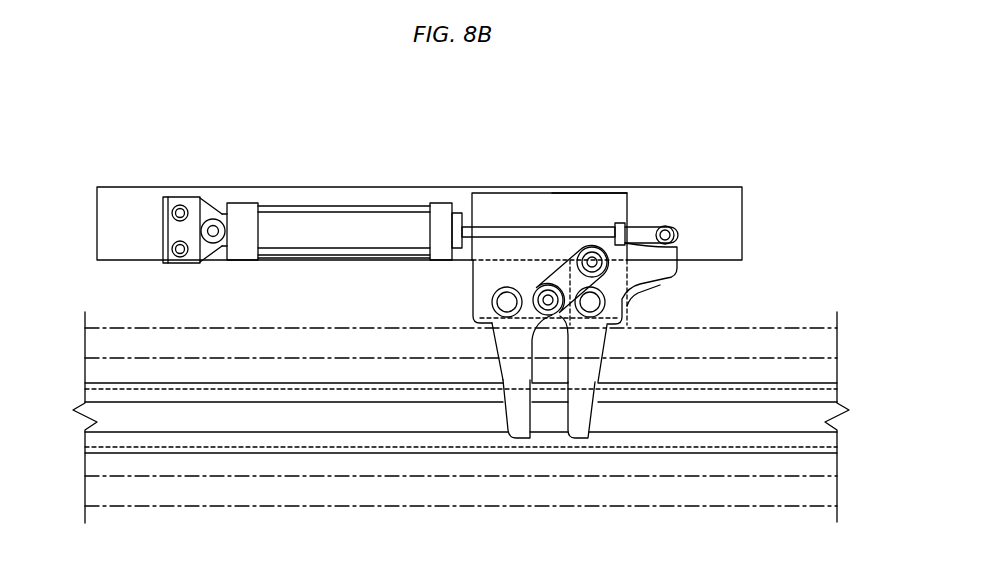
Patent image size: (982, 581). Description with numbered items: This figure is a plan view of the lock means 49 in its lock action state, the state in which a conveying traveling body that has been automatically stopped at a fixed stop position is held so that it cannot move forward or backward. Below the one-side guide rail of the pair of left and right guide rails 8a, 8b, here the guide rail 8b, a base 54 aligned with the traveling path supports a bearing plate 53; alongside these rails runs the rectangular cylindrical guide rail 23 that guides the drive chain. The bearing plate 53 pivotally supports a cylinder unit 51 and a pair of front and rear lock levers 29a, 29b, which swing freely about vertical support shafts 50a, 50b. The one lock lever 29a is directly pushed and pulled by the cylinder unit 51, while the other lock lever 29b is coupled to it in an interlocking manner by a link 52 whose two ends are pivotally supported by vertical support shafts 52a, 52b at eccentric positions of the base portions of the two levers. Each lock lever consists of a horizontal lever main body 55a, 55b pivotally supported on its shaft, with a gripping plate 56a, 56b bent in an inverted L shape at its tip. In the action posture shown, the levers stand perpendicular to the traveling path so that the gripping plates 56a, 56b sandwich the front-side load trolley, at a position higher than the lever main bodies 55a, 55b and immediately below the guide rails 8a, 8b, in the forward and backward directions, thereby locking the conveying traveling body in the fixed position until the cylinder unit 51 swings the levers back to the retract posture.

The guide rail 8a is at (393, 493).
The guide rail 8b is at (197, 345).
The rectangular cylindrical guide rail 23 is at (323, 433).
The lock lever 29a is at (576, 438).
The lock lever 29b is at (522, 438).
The lock means 49 is at (552, 193).
The vertical support shaft 50a is at (603, 307).
The vertical support shaft 50b is at (503, 298).
The cylinder unit 51 is at (343, 225).
The link 52 is at (563, 273).
The vertical support shaft 52a is at (603, 270).
The vertical support shaft 52b is at (548, 310).
The bearing plate 53 is at (602, 202).
The base 54 is at (405, 193).
The lever main body 55a is at (595, 343).
The lever main body 55b is at (510, 347).
The gripping plate 56a is at (585, 412).
The gripping plate 56b is at (513, 417).